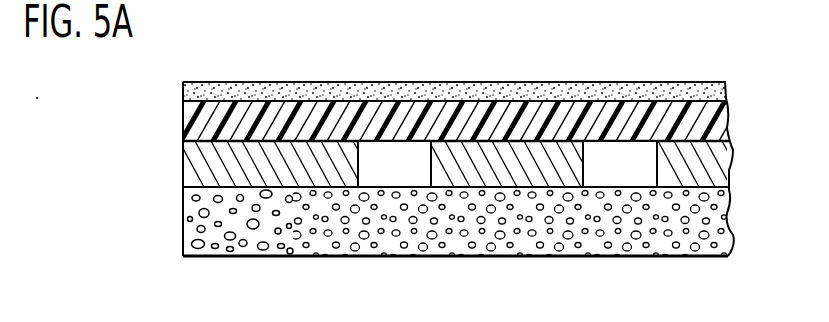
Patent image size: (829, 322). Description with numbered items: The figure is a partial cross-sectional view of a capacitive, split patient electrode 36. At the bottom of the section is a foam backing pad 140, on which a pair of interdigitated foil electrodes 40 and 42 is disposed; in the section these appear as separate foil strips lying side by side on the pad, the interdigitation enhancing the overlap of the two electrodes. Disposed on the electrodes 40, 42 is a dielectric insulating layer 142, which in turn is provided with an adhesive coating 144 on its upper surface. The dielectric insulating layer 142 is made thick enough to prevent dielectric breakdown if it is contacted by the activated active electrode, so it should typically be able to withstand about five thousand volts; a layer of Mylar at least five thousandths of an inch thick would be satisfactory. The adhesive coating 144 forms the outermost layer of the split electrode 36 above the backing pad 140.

The split electrode 36 is at (316, 52).
The foil electrode 40 is at (215, 166).
The foil electrode 42 is at (517, 158).
The foam backing pad 140 is at (328, 240).
The dielectric insulating layer 142 is at (202, 122).
The adhesive coating 144 is at (413, 89).